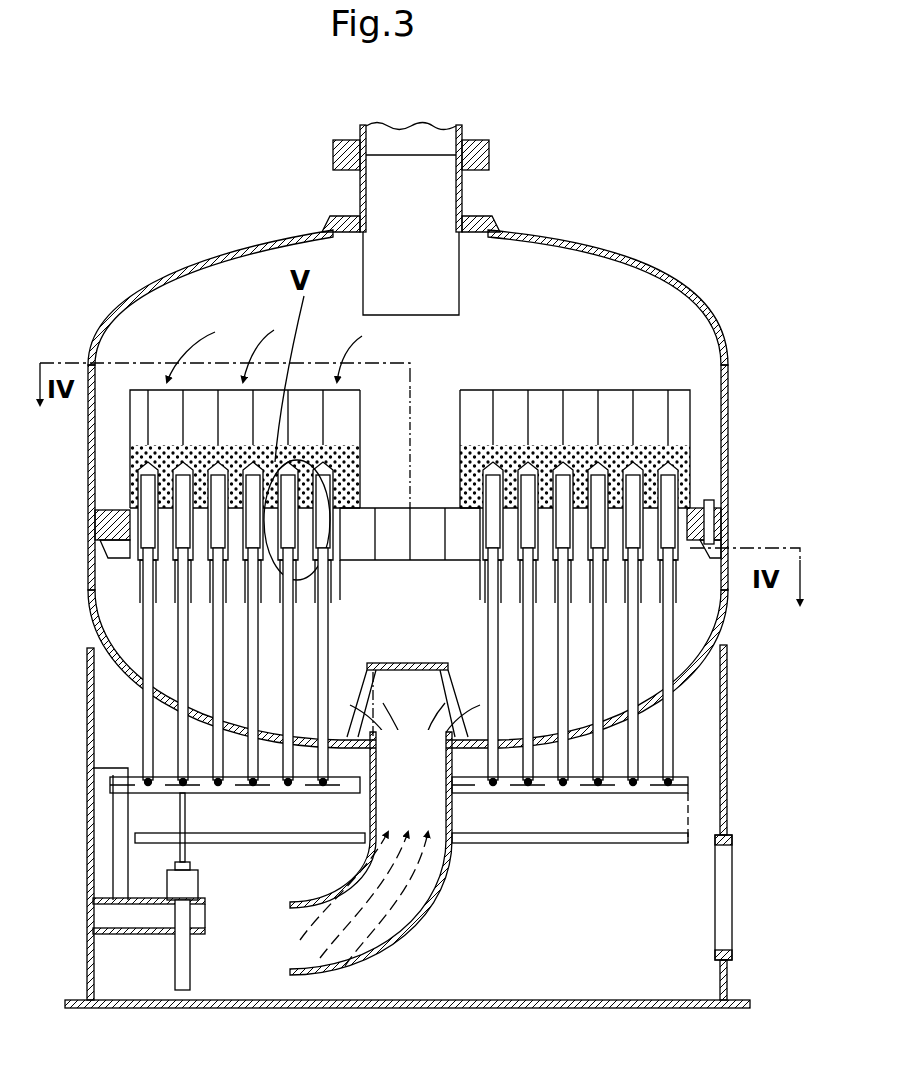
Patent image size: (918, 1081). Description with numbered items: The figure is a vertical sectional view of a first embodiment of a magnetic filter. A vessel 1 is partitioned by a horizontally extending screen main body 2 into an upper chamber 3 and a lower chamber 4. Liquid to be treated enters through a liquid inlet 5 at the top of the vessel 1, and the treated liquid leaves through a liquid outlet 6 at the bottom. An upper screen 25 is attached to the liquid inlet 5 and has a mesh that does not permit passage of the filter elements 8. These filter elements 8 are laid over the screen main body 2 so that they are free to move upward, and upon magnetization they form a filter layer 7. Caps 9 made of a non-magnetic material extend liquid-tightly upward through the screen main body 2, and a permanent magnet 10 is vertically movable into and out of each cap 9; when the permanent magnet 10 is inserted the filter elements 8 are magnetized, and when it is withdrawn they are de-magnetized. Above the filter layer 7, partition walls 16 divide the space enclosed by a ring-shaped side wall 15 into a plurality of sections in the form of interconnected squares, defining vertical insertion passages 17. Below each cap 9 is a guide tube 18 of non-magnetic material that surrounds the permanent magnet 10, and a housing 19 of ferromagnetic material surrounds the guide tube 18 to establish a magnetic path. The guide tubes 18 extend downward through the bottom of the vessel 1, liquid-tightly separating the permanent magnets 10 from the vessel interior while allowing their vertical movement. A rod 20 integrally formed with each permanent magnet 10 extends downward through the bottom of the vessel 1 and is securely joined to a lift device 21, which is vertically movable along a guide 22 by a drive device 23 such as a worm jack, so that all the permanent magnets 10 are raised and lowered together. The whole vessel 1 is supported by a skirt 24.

The vessel 1 is at (690, 285).
The screen main body 2 is at (745, 496).
The upper chamber 3 is at (152, 300).
The lower chamber 4 is at (110, 625).
The liquid inlet 5 is at (360, 187).
The liquid outlet 6 is at (405, 932).
The filter layer 7 is at (695, 440).
The filter elements 8 is at (214, 452).
The caps 9 is at (655, 402).
The permanent magnet 10 is at (150, 490).
The ring-shaped side wall 15 is at (132, 404).
The partition walls 16 is at (493, 400).
The vertical insertion passages 17 is at (305, 408).
The guide tube 18 is at (668, 680).
The housing 19 is at (340, 598).
The rod 20 is at (285, 692).
The lift device 21 is at (255, 792).
The guide 22 is at (128, 882).
The drive device 23 is at (198, 884).
The skirt 24 is at (87, 840).
The upper screen 25 is at (440, 291).